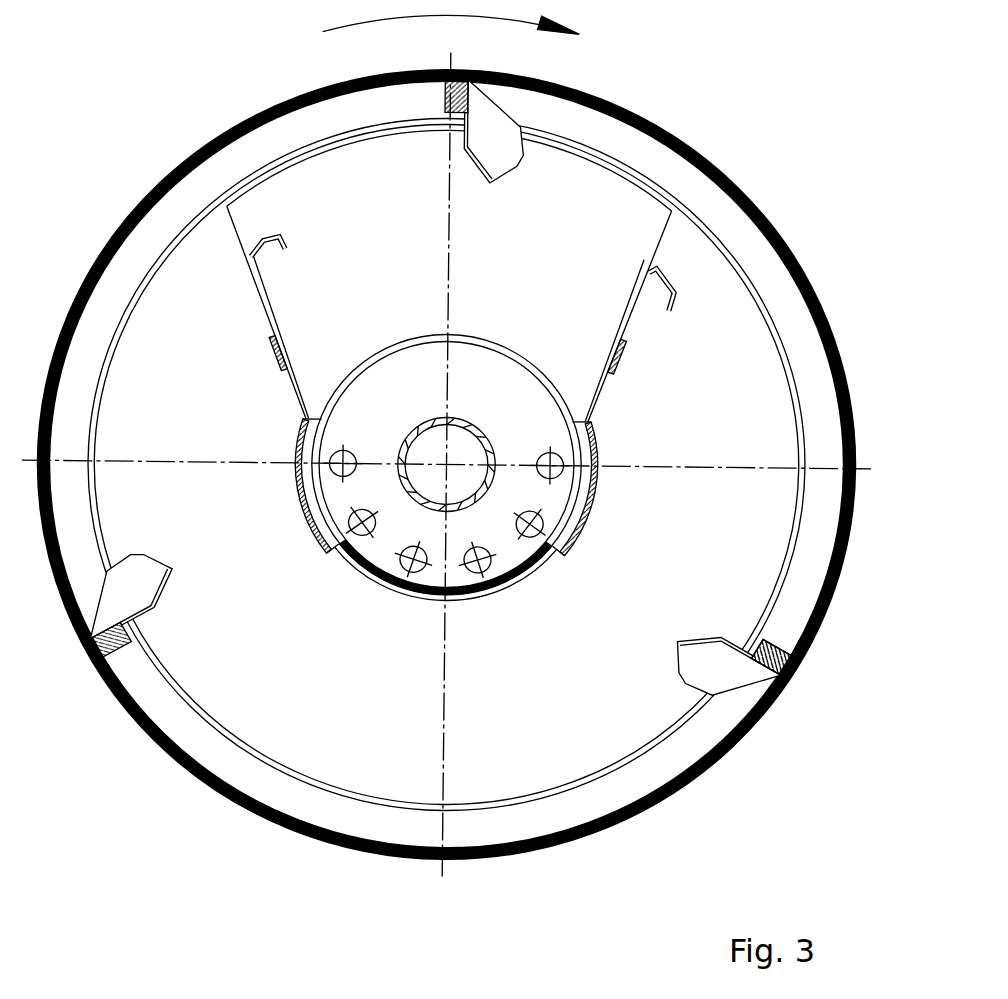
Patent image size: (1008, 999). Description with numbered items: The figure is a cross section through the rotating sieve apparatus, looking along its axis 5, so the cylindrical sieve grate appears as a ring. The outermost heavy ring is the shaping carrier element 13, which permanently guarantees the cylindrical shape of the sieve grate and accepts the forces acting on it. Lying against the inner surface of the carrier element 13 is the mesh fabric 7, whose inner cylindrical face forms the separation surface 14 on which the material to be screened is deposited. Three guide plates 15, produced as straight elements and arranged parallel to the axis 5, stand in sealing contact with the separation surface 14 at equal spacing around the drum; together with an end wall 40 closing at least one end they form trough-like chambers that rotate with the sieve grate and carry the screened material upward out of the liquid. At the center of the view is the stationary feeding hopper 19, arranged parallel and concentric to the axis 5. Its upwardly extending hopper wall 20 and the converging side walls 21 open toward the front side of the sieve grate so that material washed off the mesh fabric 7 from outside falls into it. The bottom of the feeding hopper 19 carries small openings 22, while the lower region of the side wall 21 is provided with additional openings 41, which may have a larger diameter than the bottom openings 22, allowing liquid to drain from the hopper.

The axis 5 is at (447, 464).
The mesh fabric 7 is at (820, 614).
The separation surface 14 is at (820, 614).
The carrier element 13 is at (832, 657).
The guide plates 15 is at (507, 127).
The feeding hopper 19 is at (335, 244).
The hopper wall 20 is at (538, 188).
The side walls 21 is at (260, 240).
The openings 22 is at (490, 592).
The end wall 40 is at (750, 676).
The openings 41 is at (540, 517).